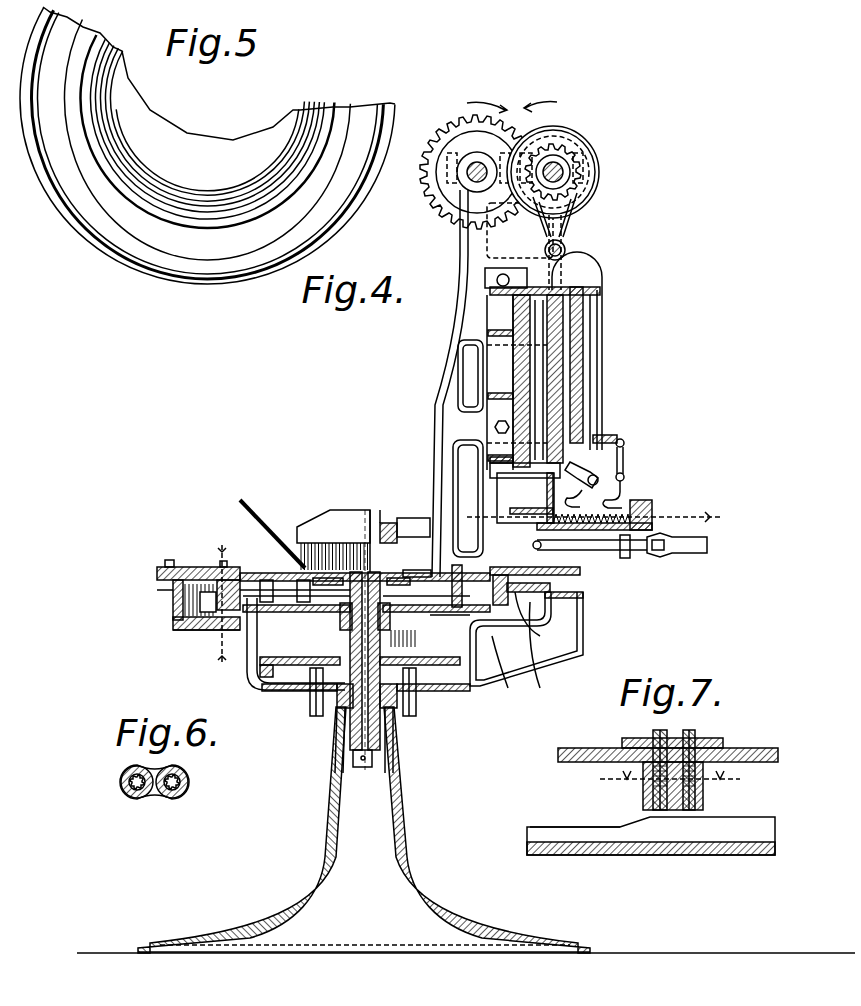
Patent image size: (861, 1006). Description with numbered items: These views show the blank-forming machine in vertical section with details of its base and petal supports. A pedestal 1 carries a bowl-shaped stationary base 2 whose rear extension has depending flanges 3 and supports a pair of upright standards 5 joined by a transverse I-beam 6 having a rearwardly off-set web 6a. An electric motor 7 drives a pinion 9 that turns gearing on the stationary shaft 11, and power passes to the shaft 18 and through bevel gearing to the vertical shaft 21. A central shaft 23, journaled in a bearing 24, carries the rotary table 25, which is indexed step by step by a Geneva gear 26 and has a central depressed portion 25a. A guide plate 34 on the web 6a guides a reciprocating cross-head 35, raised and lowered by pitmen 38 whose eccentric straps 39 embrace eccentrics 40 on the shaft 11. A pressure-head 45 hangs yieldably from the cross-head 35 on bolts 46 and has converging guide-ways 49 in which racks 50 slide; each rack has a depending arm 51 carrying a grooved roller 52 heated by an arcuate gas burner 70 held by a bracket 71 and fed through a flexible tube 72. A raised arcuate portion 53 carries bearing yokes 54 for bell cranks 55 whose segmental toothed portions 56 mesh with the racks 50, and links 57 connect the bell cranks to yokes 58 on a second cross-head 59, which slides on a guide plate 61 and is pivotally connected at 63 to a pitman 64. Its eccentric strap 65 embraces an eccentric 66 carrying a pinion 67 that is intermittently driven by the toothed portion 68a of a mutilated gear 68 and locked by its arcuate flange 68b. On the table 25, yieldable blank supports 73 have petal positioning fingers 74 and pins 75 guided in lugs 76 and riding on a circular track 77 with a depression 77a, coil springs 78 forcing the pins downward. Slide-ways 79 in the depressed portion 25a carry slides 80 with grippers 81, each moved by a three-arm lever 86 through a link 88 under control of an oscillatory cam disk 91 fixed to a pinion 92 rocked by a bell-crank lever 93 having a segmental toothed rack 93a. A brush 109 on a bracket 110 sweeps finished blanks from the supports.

In FIG. 4, the pedestal 1 is at (327, 850).
In FIG. 5, the stationary base 2 is at (230, 272).
In FIG. 4, the stationary base 2 is at (178, 624).
In FIG. 7, the stationary base 2 is at (632, 855).
In FIG. 4, the depending flanges 3 is at (578, 652).
In FIG. 4, the standards 5 is at (436, 420).
In FIG. 7, the I-beam 6 is at (673, 778).
In FIG. 4, the off-set web 6a is at (510, 360).
In FIG. 4, the electric motor 7 is at (218, 595).
In FIG. 4, the pinion 9 is at (589, 516).
In FIG. 4, the stationary shaft 11 is at (566, 172).
In FIG. 4, the shaft 18 is at (475, 168).
In FIG. 4, the vertical shaft 21 is at (478, 385).
In FIG. 4, the shaft 23 is at (355, 755).
In FIG. 4, the bearing 24 is at (337, 715).
In FIG. 4, the rotary table 25 is at (368, 574).
In FIG. 7, the rotary table 25 is at (598, 748).
In FIG. 4, the central depressed portion 25a is at (418, 571).
In FIG. 4, the Geneva gear 26 is at (173, 590).
In FIG. 4, the guide plate 34 is at (567, 360).
In FIG. 4, the cross-head 35 is at (535, 285).
In FIG. 4, the pitmen 38 is at (547, 224).
In FIG. 4, the eccentric straps 39 is at (592, 183).
In FIG. 4, the eccentrics 40 is at (557, 168).
In FIG. 4, the pressure-head 45 is at (640, 497).
In FIG. 4, the bolts 46 is at (513, 463).
In FIG. 4, the guide-ways 49 is at (678, 516).
In FIG. 4, the racks 50 is at (650, 505).
In FIG. 4, the depending arm 51 is at (528, 514).
In FIG. 4, the grooved roller 52 is at (533, 545).
In FIG. 4, the raised arcuate portion 53 is at (625, 443).
In FIG. 4, the bearing yokes 54 is at (624, 462).
In FIG. 4, the bell cranks 55 is at (618, 495).
In FIG. 4, the segmental toothed portion 56 is at (580, 504).
In FIG. 4, the links 57 is at (598, 473).
In FIG. 4, the yokes 58 is at (615, 437).
In FIG. 4, the cross-head 59 is at (592, 272).
In FIG. 4, the guide plate 61 is at (563, 397).
In FIG. 4, the pivotal connection 63 is at (566, 248).
In FIG. 4, the pitman 64 is at (567, 215).
In FIG. 4, the eccentric strap 65 is at (596, 162).
In FIG. 4, the eccentric 66 is at (582, 150).
In FIG. 4, the pinion 67 is at (567, 140).
In FIG. 4, the mutilated gear 68 is at (445, 185).
In FIG. 4, the toothed portion 68a is at (452, 138).
In FIG. 4, the arcuate locking flange 68b is at (458, 215).
In FIG. 4, the arcuate gas burner 70 is at (600, 551).
In FIG. 4, the bracket 71 is at (632, 553).
In FIG. 4, the flexible tube 72 is at (195, 628).
In FIG. 4, the blank supports 73 is at (198, 567).
In FIG. 7, the blank supports 73 is at (723, 740).
In FIG. 4, the petal positioning fingers 74 is at (168, 560).
In FIG. 4, the positioning pins 75 is at (228, 563).
In FIG. 6, the positioning pins 75 is at (132, 794).
In FIG. 7, the positioning pins 75 is at (690, 732).
In FIG. 4, the lugs 76 is at (540, 630).
In FIG. 6, the lugs 76 is at (165, 796).
In FIG. 7, the lugs 76 is at (703, 795).
In FIG. 5, the circular track 77 is at (152, 215).
In FIG. 4, the circular track 77 is at (210, 632).
In FIG. 7, the circular track 77 is at (722, 855).
In FIG. 5, the depression 77a is at (107, 183).
In FIG. 4, the depression 77a is at (510, 680).
In FIG. 7, the depression 77a is at (582, 827).
In FIG. 6, the coil springs 78 is at (185, 770).
In FIG. 7, the coil springs 78 is at (655, 786).
In FIG. 4, the slide-ways 79 is at (262, 580).
In FIG. 4, the slide 80 is at (325, 545).
In FIG. 4, the gripper 81 is at (262, 522).
In FIG. 4, the three-arm lever 86 is at (245, 662).
In FIG. 4, the link 88 is at (300, 612).
In FIG. 4, the oscillatory cam disk 91 is at (252, 680).
In FIG. 4, the pinion 92 is at (337, 695).
In FIG. 4, the bell-crank lever 93 is at (416, 712).
In FIG. 4, the segmental toothed rack 93a is at (400, 712).
In FIG. 4, the brush 109 is at (355, 515).
In FIG. 4, the bracket 110 is at (390, 527).